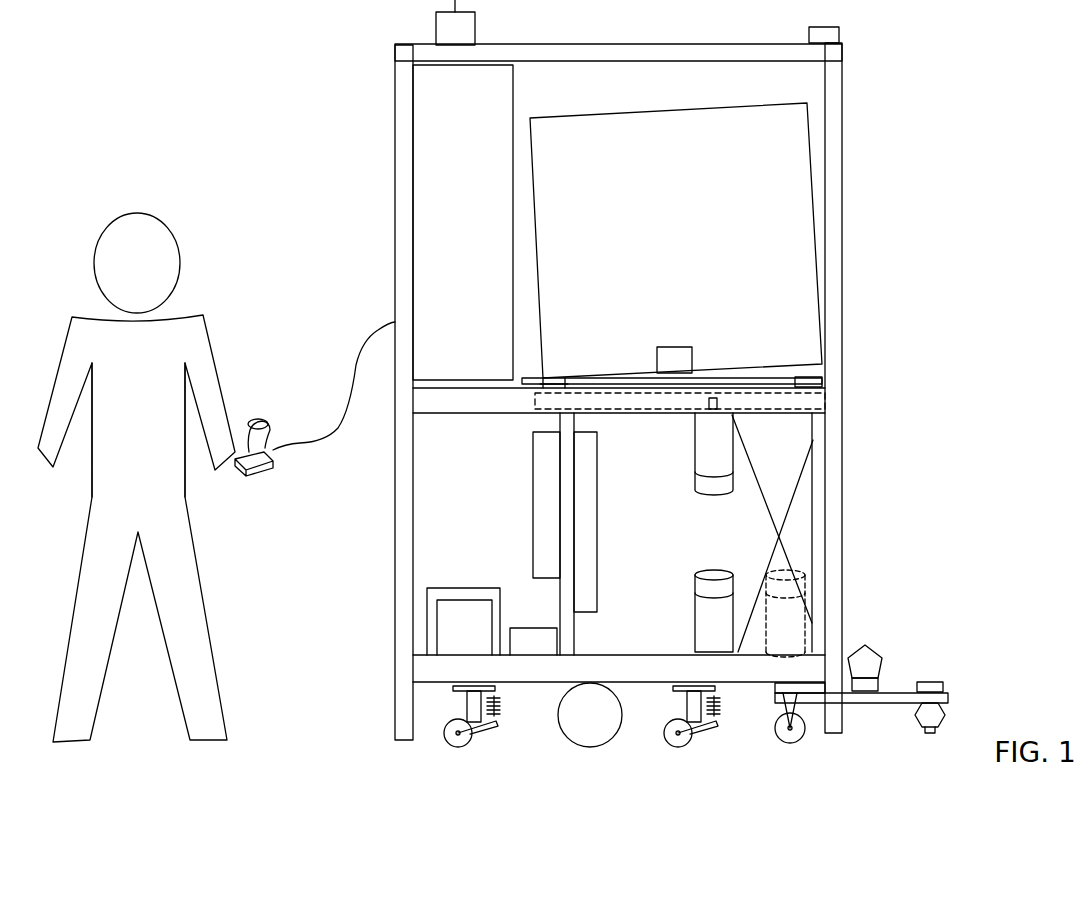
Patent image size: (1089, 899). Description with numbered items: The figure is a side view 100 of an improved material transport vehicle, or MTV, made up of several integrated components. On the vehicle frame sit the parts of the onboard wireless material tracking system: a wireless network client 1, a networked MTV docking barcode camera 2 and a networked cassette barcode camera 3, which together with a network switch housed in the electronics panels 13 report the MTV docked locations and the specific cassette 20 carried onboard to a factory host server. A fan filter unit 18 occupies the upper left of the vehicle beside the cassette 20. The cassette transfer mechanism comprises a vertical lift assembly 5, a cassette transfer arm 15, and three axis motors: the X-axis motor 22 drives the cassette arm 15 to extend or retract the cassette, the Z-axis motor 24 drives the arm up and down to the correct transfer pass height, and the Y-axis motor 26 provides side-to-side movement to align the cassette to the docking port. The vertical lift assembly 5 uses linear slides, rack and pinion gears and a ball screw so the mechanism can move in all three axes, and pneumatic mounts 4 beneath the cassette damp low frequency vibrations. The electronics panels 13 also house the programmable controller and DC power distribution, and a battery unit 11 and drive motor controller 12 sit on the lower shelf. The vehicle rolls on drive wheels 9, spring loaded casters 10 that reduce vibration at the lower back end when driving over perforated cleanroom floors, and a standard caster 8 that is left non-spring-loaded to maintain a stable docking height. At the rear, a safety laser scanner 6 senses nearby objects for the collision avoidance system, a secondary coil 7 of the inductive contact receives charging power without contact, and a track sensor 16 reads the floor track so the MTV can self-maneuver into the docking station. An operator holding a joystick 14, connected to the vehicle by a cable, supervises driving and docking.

The side view 100 is at (238, 62).
The wireless network client 1 is at (436, 28).
The networked MTV docking barcode camera 2 is at (839, 34).
The networked cassette barcode camera 3 is at (680, 347).
The pneumatic mounts 4 is at (812, 372).
The vertical lift assembly 5 is at (802, 436).
The safety laser scanner 6 is at (876, 650).
The secondary coil 7 is at (930, 682).
The standard caster 8 is at (801, 742).
The drive wheels 9 is at (590, 715).
The spring loaded casters 10 is at (468, 742).
The battery unit 11 is at (463, 621).
The drive motor controller 12 is at (530, 628).
The electronics panels 13 is at (585, 536).
The joystick 14 is at (262, 470).
The cassette transfer arm 15 is at (818, 398).
The track sensor 16 is at (930, 735).
The fan filter unit 18 is at (463, 222).
The cassette 20 is at (676, 240).
The X-axis motor 22 is at (695, 445).
The Z-axis motor 24 is at (695, 605).
The Y-axis motor 26 is at (772, 576).